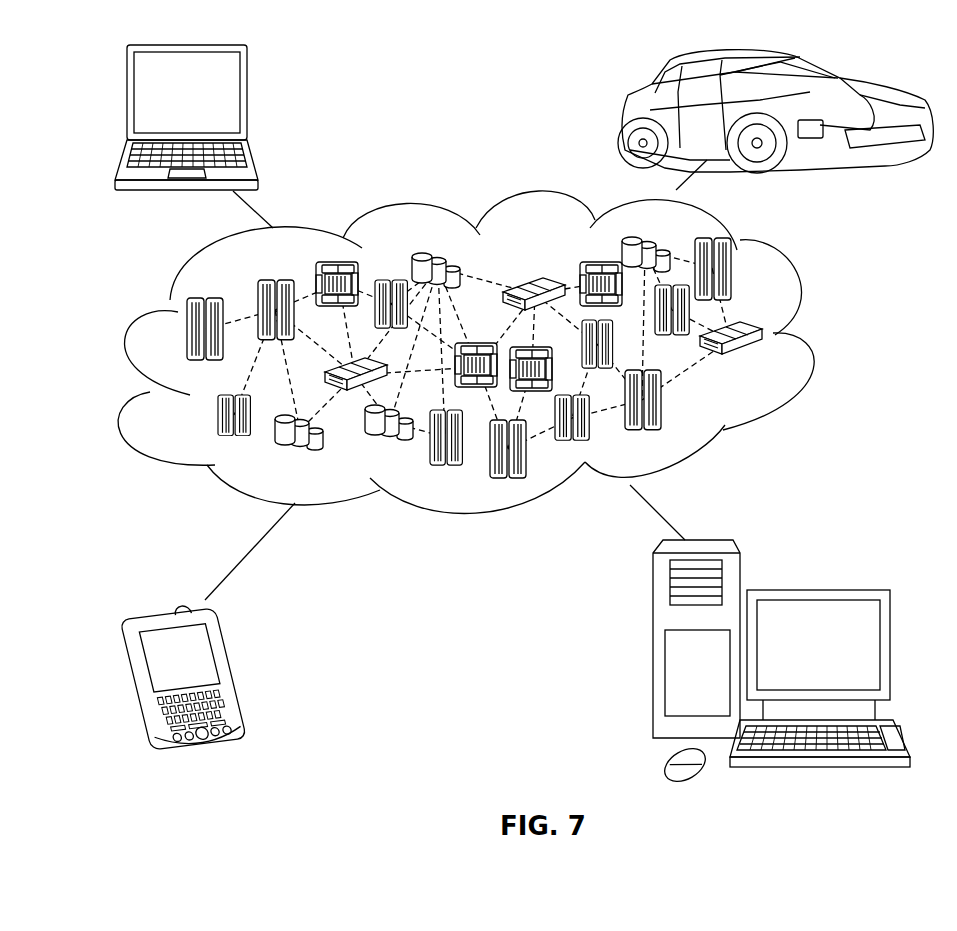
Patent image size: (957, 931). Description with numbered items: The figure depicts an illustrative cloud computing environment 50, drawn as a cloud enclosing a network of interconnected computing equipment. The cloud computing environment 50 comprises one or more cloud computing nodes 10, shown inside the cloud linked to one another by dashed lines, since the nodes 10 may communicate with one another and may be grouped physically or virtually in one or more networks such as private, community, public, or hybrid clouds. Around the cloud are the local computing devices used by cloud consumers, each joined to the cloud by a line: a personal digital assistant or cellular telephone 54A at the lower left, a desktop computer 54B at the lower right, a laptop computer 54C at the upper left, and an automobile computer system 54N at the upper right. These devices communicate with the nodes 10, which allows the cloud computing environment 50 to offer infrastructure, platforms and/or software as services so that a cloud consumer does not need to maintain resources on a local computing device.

The cloud computing node 10 is at (772, 366).
The cloud computing environment 50 is at (820, 336).
The personal digital assistant (PDA) or cellular telephone 54A is at (240, 670).
The desktop computer 54B is at (822, 588).
The laptop computer 54C is at (248, 100).
The automobile computer system 54N is at (627, 115).